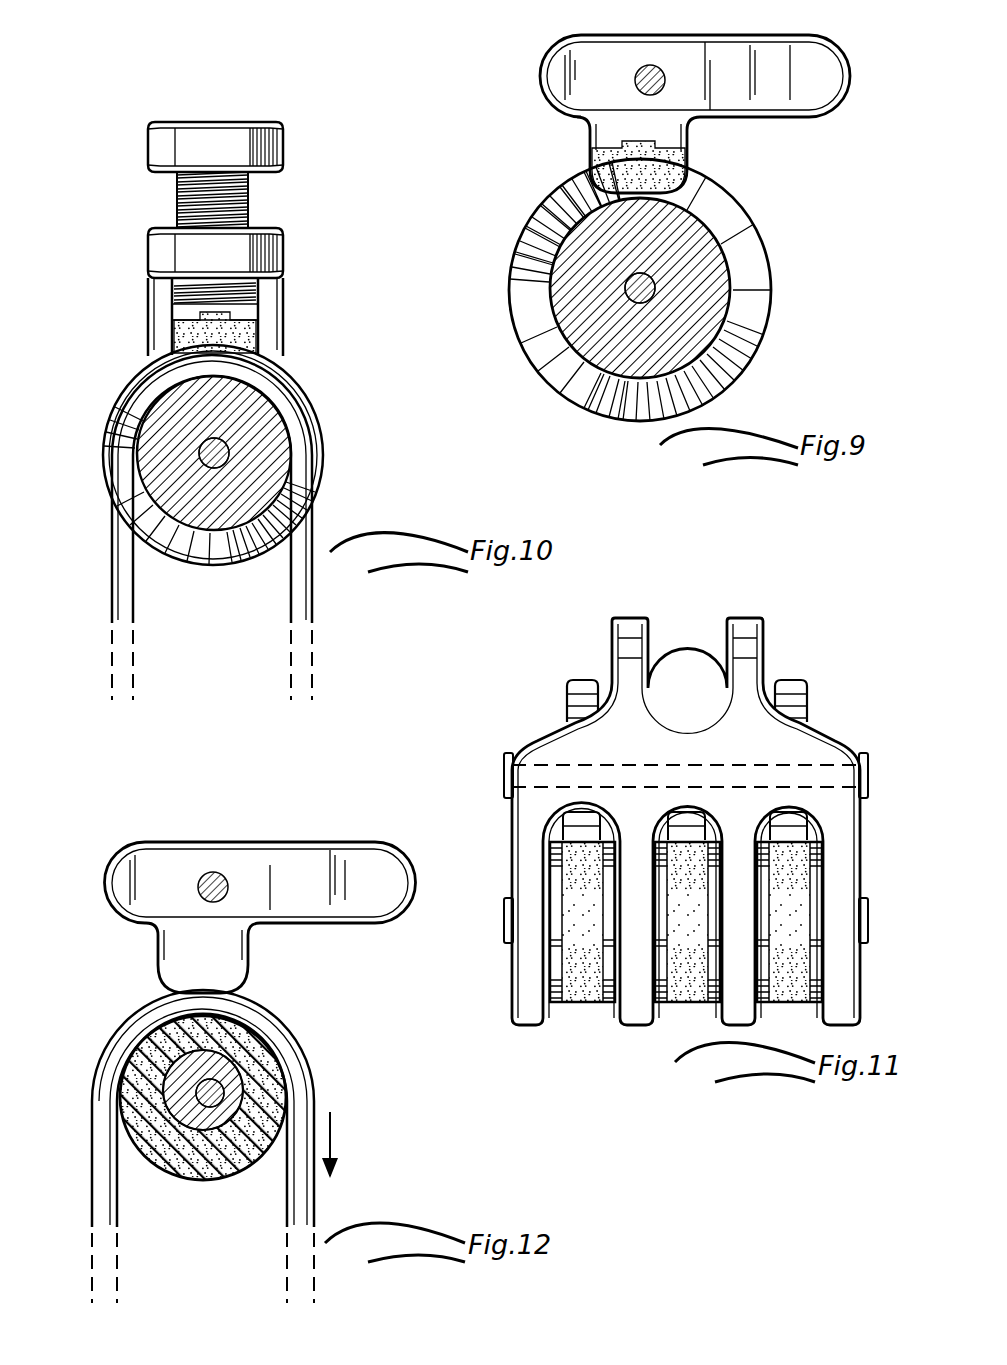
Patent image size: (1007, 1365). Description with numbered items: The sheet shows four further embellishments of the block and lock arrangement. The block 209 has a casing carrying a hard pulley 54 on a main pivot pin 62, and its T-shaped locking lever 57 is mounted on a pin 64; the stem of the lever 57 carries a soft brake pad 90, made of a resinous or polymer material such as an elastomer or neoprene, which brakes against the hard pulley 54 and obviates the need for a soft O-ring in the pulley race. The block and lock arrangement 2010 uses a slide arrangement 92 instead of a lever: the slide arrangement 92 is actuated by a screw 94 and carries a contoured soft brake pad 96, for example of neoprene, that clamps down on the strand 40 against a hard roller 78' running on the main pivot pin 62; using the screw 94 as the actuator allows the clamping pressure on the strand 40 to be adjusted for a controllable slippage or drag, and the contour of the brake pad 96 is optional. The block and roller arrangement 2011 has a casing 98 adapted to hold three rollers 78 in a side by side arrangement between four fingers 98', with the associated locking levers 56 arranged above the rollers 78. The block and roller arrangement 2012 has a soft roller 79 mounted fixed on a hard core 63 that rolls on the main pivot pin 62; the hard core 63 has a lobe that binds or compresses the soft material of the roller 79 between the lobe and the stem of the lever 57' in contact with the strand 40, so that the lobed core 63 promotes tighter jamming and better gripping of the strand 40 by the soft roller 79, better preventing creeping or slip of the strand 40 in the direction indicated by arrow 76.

In FIG. 10, the block and lock arrangement 2010 is at (138, 190).
In FIG. 10, the screw 94 is at (250, 200).
In FIG. 10, the slide arrangement 92 is at (298, 290).
In FIG. 10, the brake pad 96 is at (248, 340).
In FIG. 10, the main pivot pin 62 is at (226, 444).
In FIG. 9, the main pivot pin 62 is at (651, 280).
In FIG. 11, the main pivot pin 62 is at (510, 900).
In FIG. 12, the main pivot pin 62 is at (218, 1086).
In FIG. 10, the hard roller 78' is at (213, 478).
In FIG. 10, the strand 40 is at (300, 572).
In FIG. 12, the strand 40 is at (98, 1152).
In FIG. 9, the block 209 is at (528, 155).
In FIG. 9, the locking lever 57 is at (706, 96).
In FIG. 9, the pin 64 is at (660, 90).
In FIG. 11, the pin 64 is at (510, 758).
In FIG. 12, the pin 64 is at (221, 878).
In FIG. 9, the soft brake pad 90 is at (686, 166).
In FIG. 9, the pulley 54 is at (720, 215).
In FIG. 11, the block and roller arrangement 2011 is at (560, 658).
In FIG. 11, the casing 98 is at (722, 637).
In FIG. 11, the locking lever 56 is at (800, 700).
In FIG. 11, the fingers 98' is at (715, 843).
In FIG. 11, the rollers 78 is at (686, 951).
In FIG. 12, the block and roller arrangement 2012 is at (182, 834).
In FIG. 12, the lever 57' is at (260, 893).
In FIG. 12, the hard core 63 is at (232, 1072).
In FIG. 12, the arrow 76 is at (330, 1118).
In FIG. 12, the soft roller 79 is at (215, 1180).